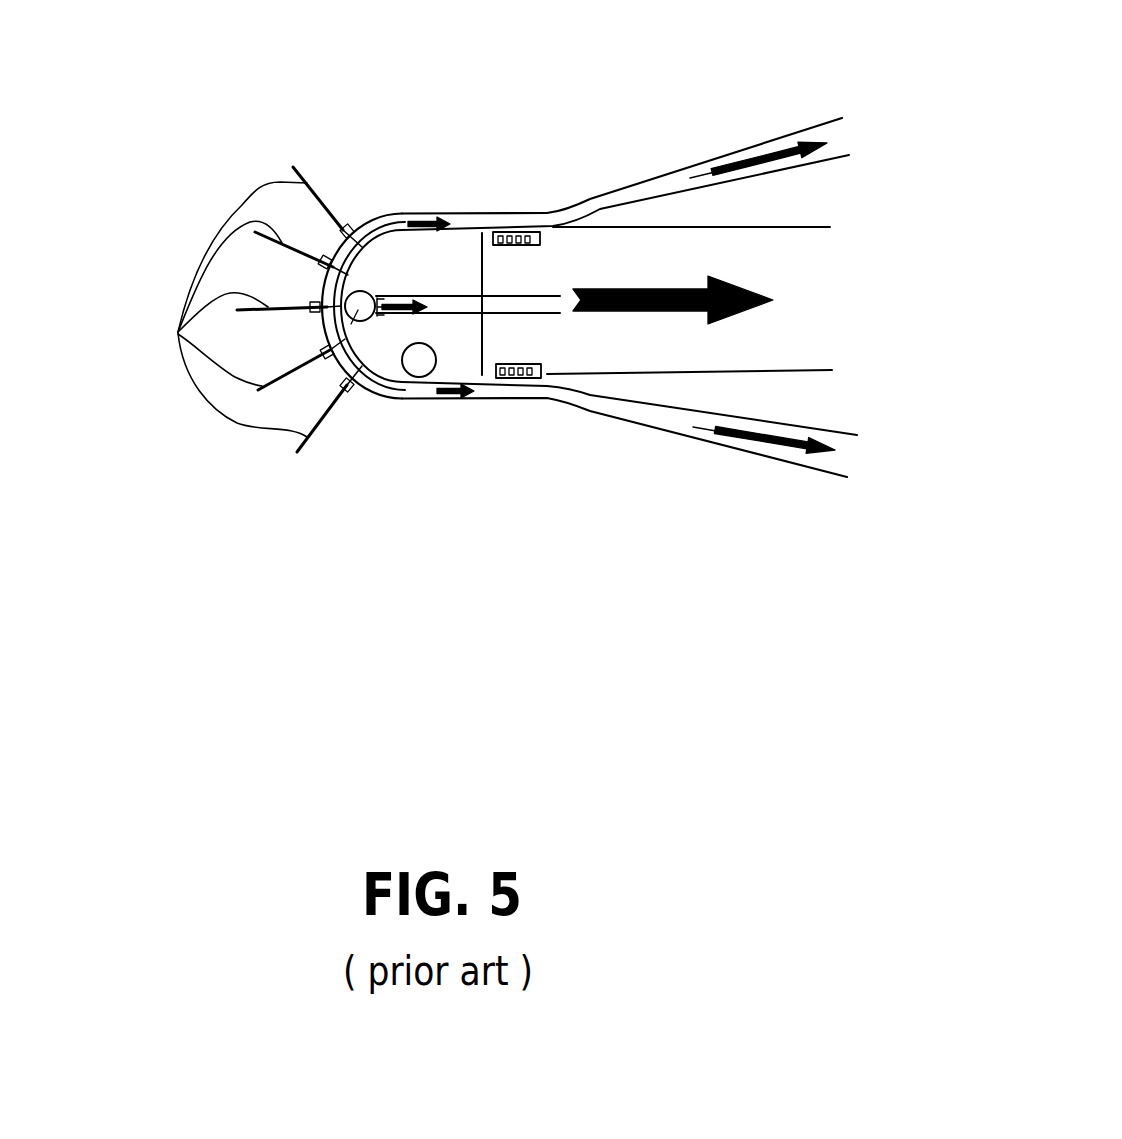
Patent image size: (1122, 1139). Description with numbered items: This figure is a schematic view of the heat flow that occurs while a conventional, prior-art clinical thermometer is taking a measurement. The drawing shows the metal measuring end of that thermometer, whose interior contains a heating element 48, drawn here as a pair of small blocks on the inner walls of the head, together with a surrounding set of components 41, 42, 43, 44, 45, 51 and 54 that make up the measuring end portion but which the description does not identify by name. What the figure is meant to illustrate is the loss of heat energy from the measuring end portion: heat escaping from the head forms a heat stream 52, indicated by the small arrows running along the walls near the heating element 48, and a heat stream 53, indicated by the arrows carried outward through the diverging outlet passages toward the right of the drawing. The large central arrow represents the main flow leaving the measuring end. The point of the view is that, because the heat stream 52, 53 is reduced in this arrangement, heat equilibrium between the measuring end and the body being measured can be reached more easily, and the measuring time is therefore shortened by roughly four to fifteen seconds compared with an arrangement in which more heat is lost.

The gas outlet nozzle 41 is at (641, 153).
The housing wall 42 is at (468, 212).
The annular ring 43 is at (362, 385).
The ball 44 is at (417, 372).
The ball 45 is at (380, 262).
The heating element 48 is at (520, 232).
The electrodes 51 is at (178, 333).
The heat stream 52 is at (425, 222).
The heat stream 53 is at (750, 165).
The central flow 54 is at (401, 282).